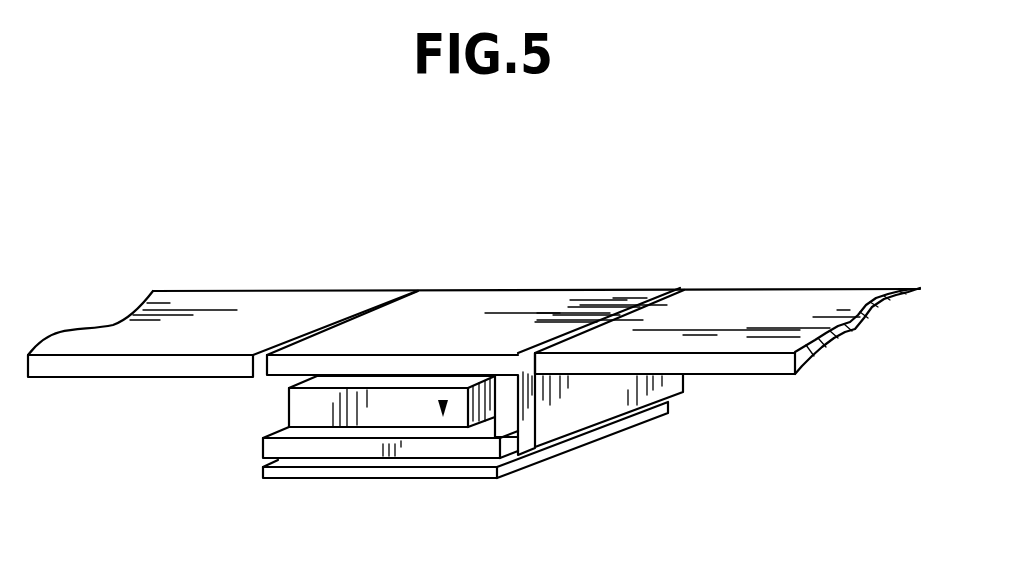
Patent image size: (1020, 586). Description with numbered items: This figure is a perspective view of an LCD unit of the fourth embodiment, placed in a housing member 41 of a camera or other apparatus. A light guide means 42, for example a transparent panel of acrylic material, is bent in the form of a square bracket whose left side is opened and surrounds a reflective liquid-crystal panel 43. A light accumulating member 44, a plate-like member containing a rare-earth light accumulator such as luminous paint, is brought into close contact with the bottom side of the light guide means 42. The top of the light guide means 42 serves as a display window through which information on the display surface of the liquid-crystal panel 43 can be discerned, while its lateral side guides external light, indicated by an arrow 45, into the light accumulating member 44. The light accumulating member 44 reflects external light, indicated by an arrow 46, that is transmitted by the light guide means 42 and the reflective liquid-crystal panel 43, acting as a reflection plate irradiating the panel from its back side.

The housing member 41 is at (279, 308).
The light guide means 42 is at (422, 452).
The reflective liquid-crystal panel 43 is at (313, 409).
The light accumulating member 44 is at (307, 470).
The arrow 45 is at (452, 447).
The arrow 46 is at (443, 402).